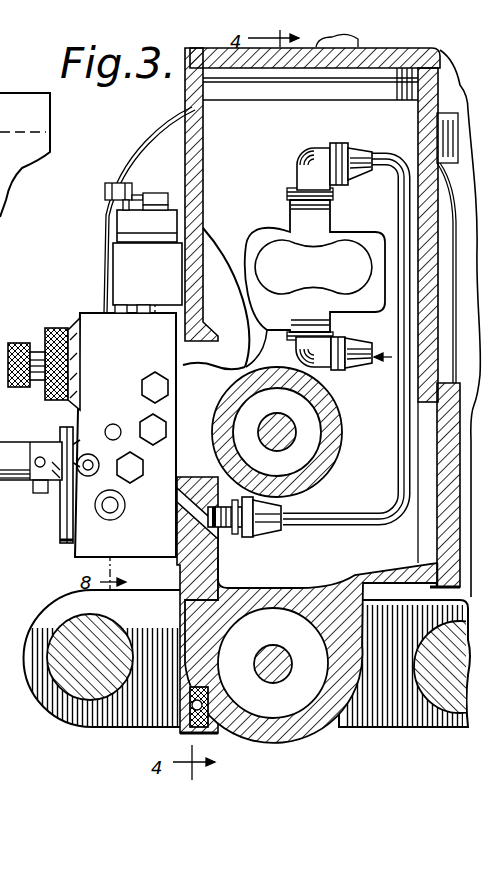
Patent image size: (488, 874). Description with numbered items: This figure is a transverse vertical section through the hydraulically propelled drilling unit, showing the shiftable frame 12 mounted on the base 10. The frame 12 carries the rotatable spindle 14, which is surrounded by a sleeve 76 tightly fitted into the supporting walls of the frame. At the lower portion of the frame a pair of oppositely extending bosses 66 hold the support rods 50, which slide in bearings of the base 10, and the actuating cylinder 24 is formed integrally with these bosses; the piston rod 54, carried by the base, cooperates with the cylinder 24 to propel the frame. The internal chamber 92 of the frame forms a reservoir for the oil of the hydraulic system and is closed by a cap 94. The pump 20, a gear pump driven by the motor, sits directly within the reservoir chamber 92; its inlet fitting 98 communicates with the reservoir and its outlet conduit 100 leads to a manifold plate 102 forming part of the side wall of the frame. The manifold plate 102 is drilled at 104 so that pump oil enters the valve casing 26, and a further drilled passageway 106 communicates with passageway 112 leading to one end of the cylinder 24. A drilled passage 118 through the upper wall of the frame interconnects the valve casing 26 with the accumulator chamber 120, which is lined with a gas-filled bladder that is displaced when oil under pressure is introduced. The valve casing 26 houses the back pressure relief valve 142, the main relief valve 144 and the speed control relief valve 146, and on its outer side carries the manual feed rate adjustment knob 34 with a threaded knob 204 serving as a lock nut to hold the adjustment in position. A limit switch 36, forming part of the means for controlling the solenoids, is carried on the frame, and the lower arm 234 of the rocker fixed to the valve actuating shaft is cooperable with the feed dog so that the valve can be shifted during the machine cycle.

The base 10 is at (0, 230).
The shiftable frame 12 is at (192, 135).
The rotatable spindle 14 is at (283, 406).
The pump 20 is at (262, 212).
The cylinder 24 is at (284, 740).
The valve 26 is at (158, 550).
The manual feed rate adjustment knob 34 is at (61, 326).
The limit switch 36 is at (127, 222).
The support rods 50 is at (106, 640).
The piston rod 54 is at (269, 679).
The bosses 66 is at (110, 705).
The sleeve 76 is at (343, 434).
The reservoir chamber 92 is at (272, 144).
The cap 94 is at (443, 55).
The inlet conduit or fitting 98 is at (363, 368).
The outlet conduit 100 is at (383, 158).
The manifold plate 102 is at (222, 556).
The drilled passage in manifold plate 104 is at (200, 496).
The drilled passageway 106 is at (190, 528).
The passageway 112 is at (212, 736).
The drilled passage 118 is at (182, 329).
The accumulator chamber 120 is at (244, 302).
The back pressure relief valve 142 is at (78, 452).
The main relief valve 144 is at (141, 420).
The speed control load or relief valve 146 is at (144, 374).
The threaded knob 204 is at (22, 343).
The lower arm of rocker 234 is at (40, 493).